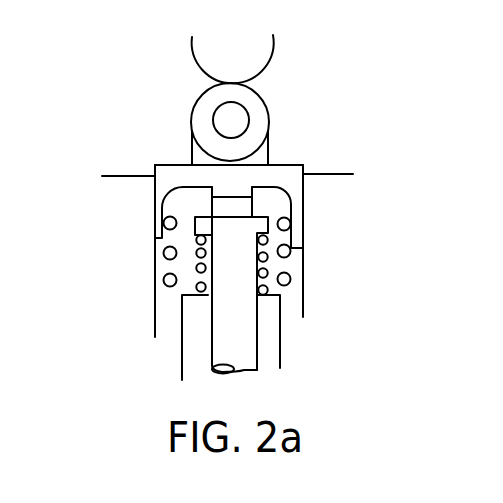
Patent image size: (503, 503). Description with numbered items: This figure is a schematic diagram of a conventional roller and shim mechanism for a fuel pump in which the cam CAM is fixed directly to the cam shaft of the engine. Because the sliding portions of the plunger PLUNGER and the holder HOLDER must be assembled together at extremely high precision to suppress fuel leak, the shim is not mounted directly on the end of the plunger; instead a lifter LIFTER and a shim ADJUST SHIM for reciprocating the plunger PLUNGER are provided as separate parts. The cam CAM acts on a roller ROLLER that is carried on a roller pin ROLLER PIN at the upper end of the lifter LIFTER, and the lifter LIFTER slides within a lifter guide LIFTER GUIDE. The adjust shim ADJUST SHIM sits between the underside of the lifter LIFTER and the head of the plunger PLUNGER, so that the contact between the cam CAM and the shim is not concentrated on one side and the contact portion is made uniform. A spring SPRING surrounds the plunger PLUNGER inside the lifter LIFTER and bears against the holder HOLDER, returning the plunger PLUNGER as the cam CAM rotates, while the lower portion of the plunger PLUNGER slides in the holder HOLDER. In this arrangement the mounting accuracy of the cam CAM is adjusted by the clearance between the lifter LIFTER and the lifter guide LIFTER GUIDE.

The cam CAM is at (262, 46).
The roller ROLLER is at (262, 103).
The roller pin ROLLER PIN is at (232, 114).
The lifter LIFTER is at (290, 168).
The lifter guide LIFTER GUIDE is at (135, 213).
The shim ADJUST SHIM is at (245, 205).
The plunger PLUNGER is at (245, 267).
The spring SPRING is at (165, 285).
The holder HOLDER is at (278, 328).